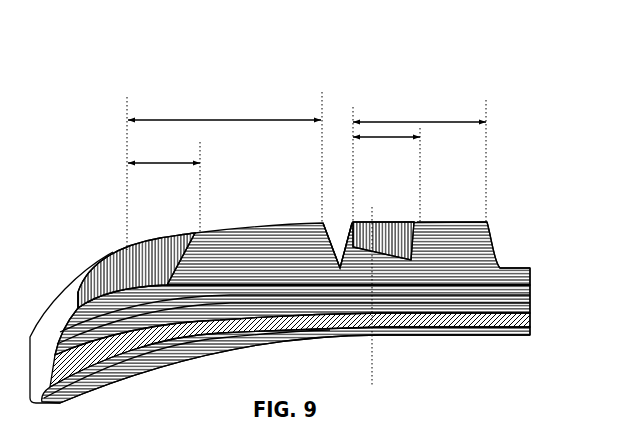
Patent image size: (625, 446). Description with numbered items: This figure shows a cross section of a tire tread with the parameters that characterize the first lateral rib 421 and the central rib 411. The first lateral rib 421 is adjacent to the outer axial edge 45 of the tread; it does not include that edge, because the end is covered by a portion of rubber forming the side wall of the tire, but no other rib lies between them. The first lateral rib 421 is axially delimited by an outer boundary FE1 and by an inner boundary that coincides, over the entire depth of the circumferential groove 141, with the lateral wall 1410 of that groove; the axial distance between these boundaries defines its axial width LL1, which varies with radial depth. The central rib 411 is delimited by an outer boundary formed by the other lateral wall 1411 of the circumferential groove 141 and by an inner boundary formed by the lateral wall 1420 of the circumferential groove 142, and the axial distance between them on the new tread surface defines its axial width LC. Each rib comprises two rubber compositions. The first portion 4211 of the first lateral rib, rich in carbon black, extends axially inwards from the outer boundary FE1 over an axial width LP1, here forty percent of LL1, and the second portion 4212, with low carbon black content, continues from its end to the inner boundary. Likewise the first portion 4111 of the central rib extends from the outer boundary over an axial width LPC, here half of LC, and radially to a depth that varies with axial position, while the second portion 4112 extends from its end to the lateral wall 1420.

The central rib 411 is at (413, 64).
The first lateral rib 421 is at (304, 156).
The first portion of the first lateral rib 4211 is at (153, 262).
The second portion of the first lateral rib 4212 is at (220, 240).
The first portion of the central rib 4111 is at (372, 224).
The second portion of the central rib 4112 is at (434, 228).
The circumferential groove 141 is at (338, 206).
The lateral wall of the circumferential groove 141 1410 is at (326, 226).
The lateral wall of the circumferential groove 141 1411 is at (348, 226).
The lateral wall of the circumferential groove 142 1420 is at (496, 226).
The circumferential groove 142 is at (525, 181).
The outer axial edge of the tread 45 is at (89, 266).
The outer boundary of the first lateral rib FE1 is at (79, 288).
The axial width of the first lateral rib LL1 is at (224, 108).
The axial width of the first portion of the first lateral rib LP1 is at (164, 153).
The axial width of the central rib LC is at (419, 109).
The axial width of the first portion of the central rib LPC is at (386, 150).